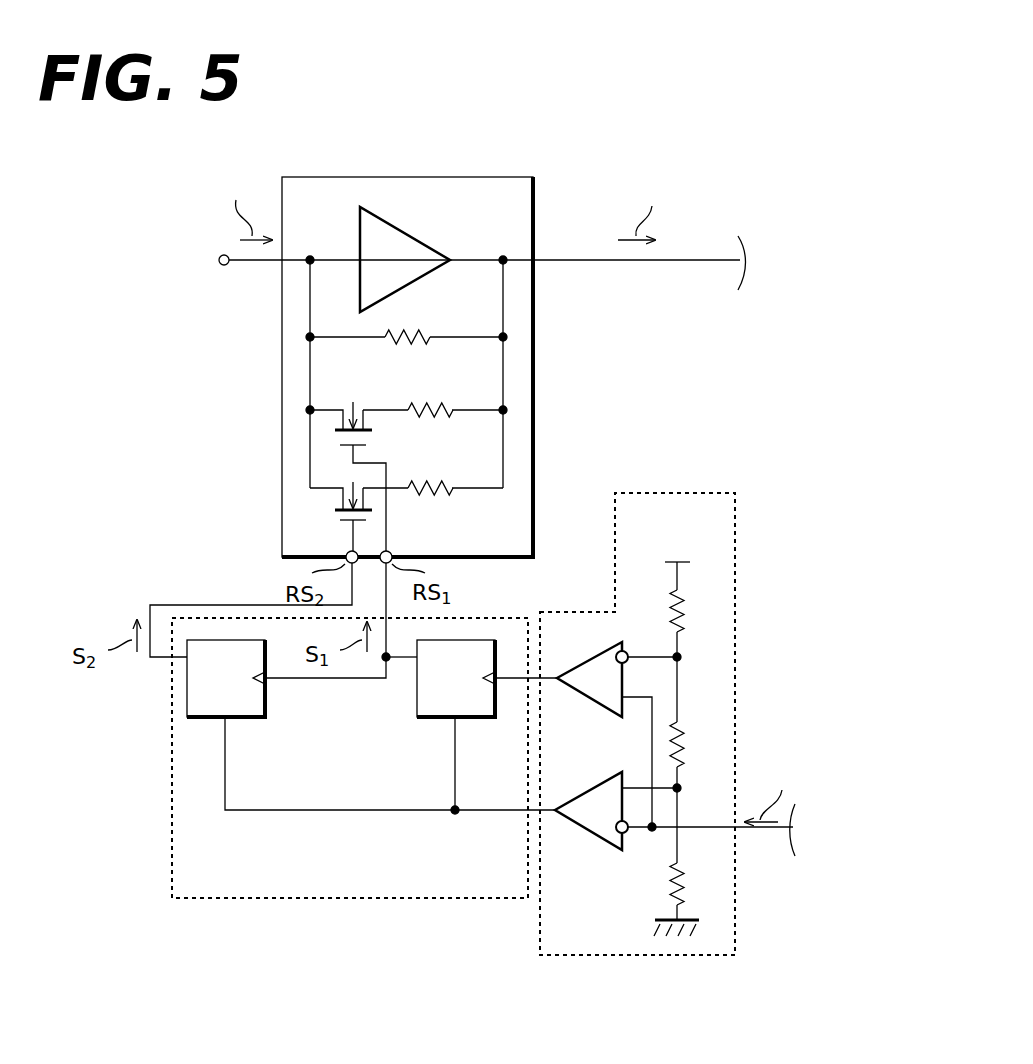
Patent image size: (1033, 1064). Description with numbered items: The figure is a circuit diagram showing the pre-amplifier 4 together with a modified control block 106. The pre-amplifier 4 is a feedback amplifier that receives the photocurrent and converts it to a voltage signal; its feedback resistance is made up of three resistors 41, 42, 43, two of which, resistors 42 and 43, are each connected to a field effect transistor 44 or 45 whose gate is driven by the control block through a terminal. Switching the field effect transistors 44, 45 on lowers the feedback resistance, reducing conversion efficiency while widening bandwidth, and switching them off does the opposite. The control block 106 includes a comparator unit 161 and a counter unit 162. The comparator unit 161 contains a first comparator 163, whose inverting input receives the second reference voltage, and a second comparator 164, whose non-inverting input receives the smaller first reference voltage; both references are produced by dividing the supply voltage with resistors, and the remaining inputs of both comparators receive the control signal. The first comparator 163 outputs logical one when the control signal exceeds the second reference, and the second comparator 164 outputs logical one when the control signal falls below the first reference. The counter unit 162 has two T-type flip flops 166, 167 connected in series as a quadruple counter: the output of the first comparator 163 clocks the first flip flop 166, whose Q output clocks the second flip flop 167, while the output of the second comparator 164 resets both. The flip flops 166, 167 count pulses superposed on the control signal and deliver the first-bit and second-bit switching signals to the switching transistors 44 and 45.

The pre-amplifier 4 is at (470, 177).
The resistor 41 is at (390, 345).
The resistor 42 is at (440, 420).
The resistor 43 is at (440, 498).
The field effect transistor 44 is at (346, 444).
The field effect transistor 45 is at (346, 521).
The control block 106 is at (520, 922).
The comparator unit 161 is at (680, 957).
The counter unit 162 is at (240, 898).
The first comparator 163 is at (590, 705).
The second comparator 164 is at (590, 840).
The first T-type flip flop 166 is at (480, 720).
The second T-type flip flop 167 is at (250, 720).